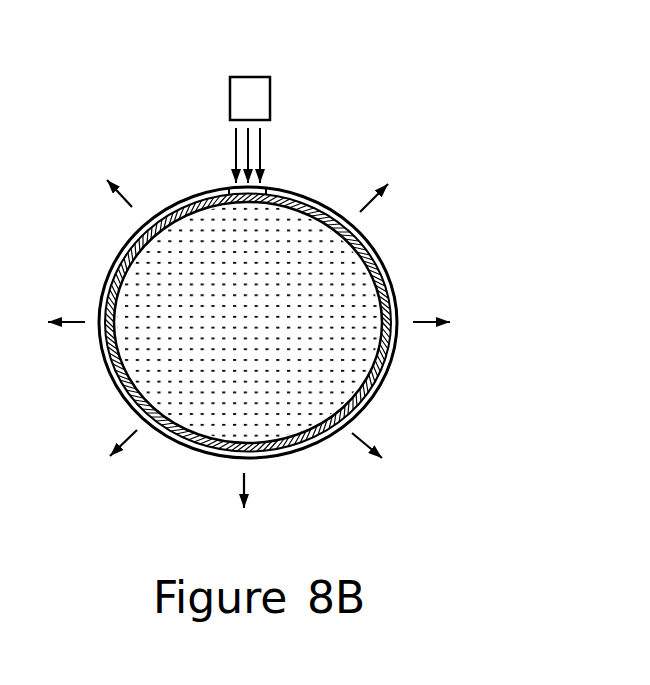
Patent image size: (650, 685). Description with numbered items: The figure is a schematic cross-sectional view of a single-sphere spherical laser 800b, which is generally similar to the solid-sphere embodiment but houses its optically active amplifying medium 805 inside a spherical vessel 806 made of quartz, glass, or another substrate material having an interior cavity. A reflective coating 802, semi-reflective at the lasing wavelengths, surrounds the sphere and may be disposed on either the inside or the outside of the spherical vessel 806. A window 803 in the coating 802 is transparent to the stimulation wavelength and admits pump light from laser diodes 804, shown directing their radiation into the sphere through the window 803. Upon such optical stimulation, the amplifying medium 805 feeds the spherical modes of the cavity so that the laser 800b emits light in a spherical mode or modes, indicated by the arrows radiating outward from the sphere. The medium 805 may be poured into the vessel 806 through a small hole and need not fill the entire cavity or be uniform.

The spherical laser 800b is at (435, 140).
The reflective coating 802 is at (397, 320).
The window 803 is at (255, 186).
The laser diodes 804 is at (262, 87).
The optically active amplifying medium 805 is at (340, 242).
The spherical vessel 806 is at (353, 401).